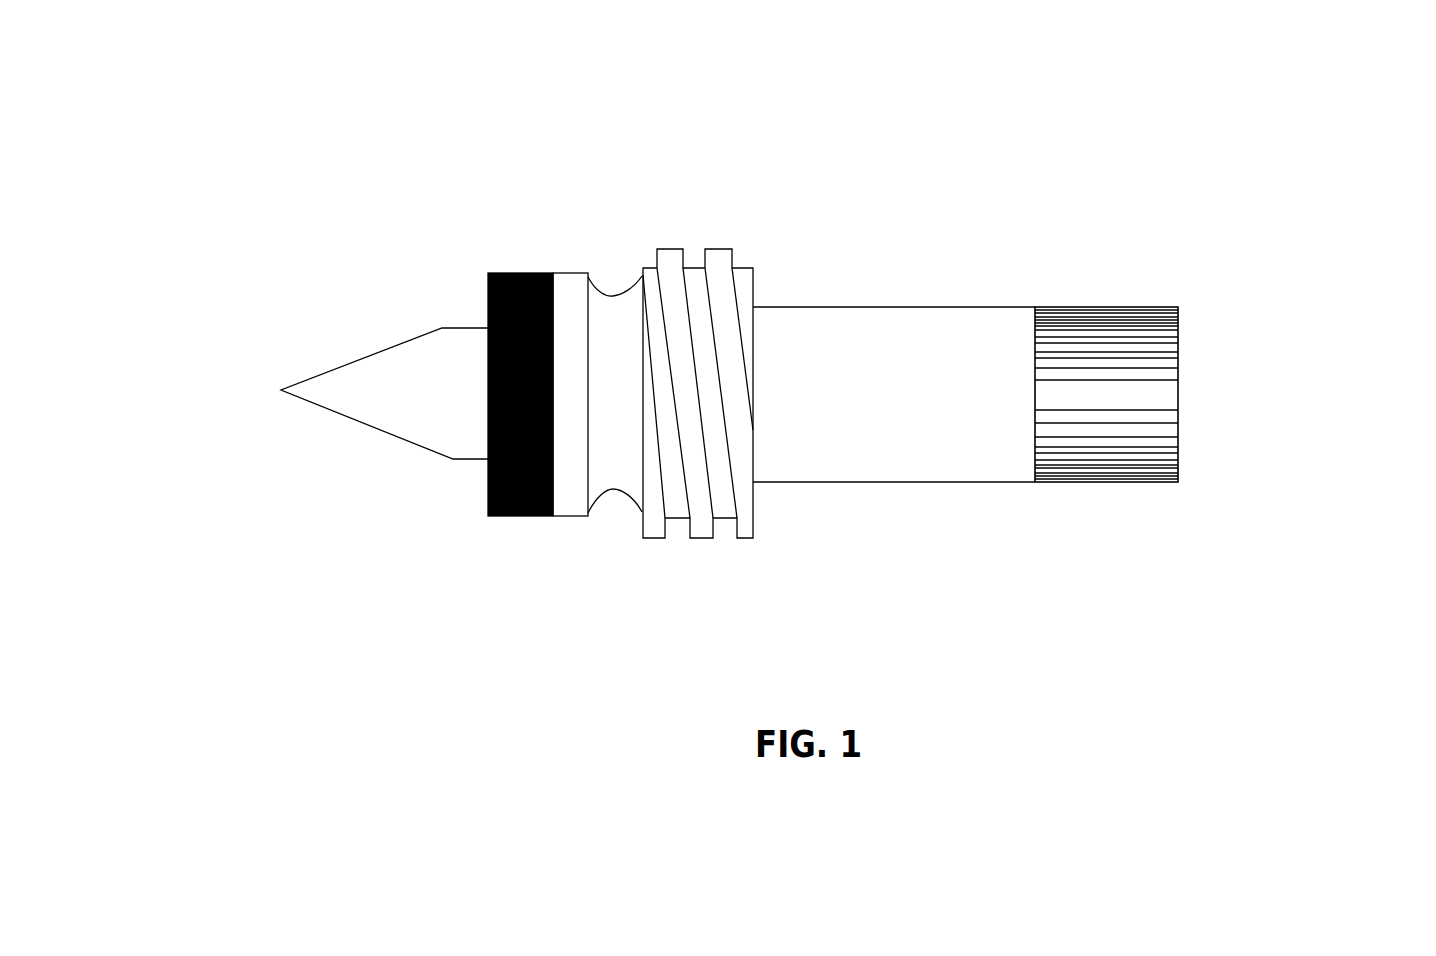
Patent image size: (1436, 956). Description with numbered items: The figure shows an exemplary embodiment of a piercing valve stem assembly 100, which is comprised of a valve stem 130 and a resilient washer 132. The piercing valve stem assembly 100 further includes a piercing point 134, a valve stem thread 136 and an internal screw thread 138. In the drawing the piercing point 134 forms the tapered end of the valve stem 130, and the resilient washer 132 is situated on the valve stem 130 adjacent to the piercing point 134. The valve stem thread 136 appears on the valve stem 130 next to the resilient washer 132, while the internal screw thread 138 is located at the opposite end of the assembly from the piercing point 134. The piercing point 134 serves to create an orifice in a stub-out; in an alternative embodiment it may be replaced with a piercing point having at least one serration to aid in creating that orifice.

The piercing valve stem assembly 100 is at (1206, 103).
The valve stem 130 is at (843, 306).
The resilient washer 132 is at (513, 268).
The piercing point 134 is at (288, 368).
The valve stem thread 136 is at (689, 537).
The internal screw thread 138 is at (1178, 376).